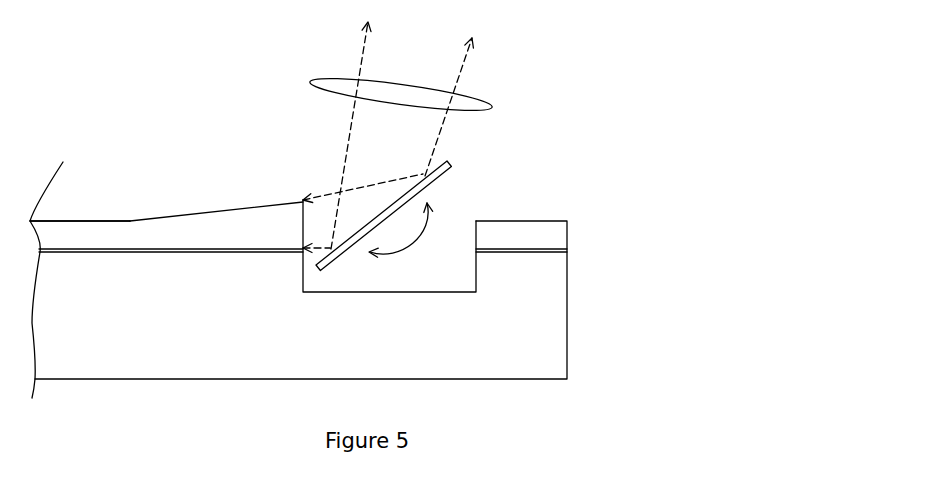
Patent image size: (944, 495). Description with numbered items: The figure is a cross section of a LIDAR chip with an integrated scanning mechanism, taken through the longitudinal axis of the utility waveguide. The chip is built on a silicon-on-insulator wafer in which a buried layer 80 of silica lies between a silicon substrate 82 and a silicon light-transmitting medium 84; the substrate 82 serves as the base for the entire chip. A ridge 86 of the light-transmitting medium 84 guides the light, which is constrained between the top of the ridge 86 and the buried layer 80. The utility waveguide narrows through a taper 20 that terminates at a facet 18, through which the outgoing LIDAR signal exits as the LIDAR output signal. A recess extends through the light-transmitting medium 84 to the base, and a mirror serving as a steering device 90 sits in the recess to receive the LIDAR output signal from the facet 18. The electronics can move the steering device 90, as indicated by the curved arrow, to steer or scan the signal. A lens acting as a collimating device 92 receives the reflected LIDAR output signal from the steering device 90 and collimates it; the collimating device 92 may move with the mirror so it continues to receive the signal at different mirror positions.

The facet 18 is at (300, 228).
The taper 20 is at (265, 206).
The buried layer 80 is at (120, 253).
The substrate 82 is at (132, 370).
The light-transmitting medium 84 is at (105, 230).
The ridge 86 is at (125, 221).
The steering device 90 is at (451, 166).
The collimating device 92 is at (492, 106).